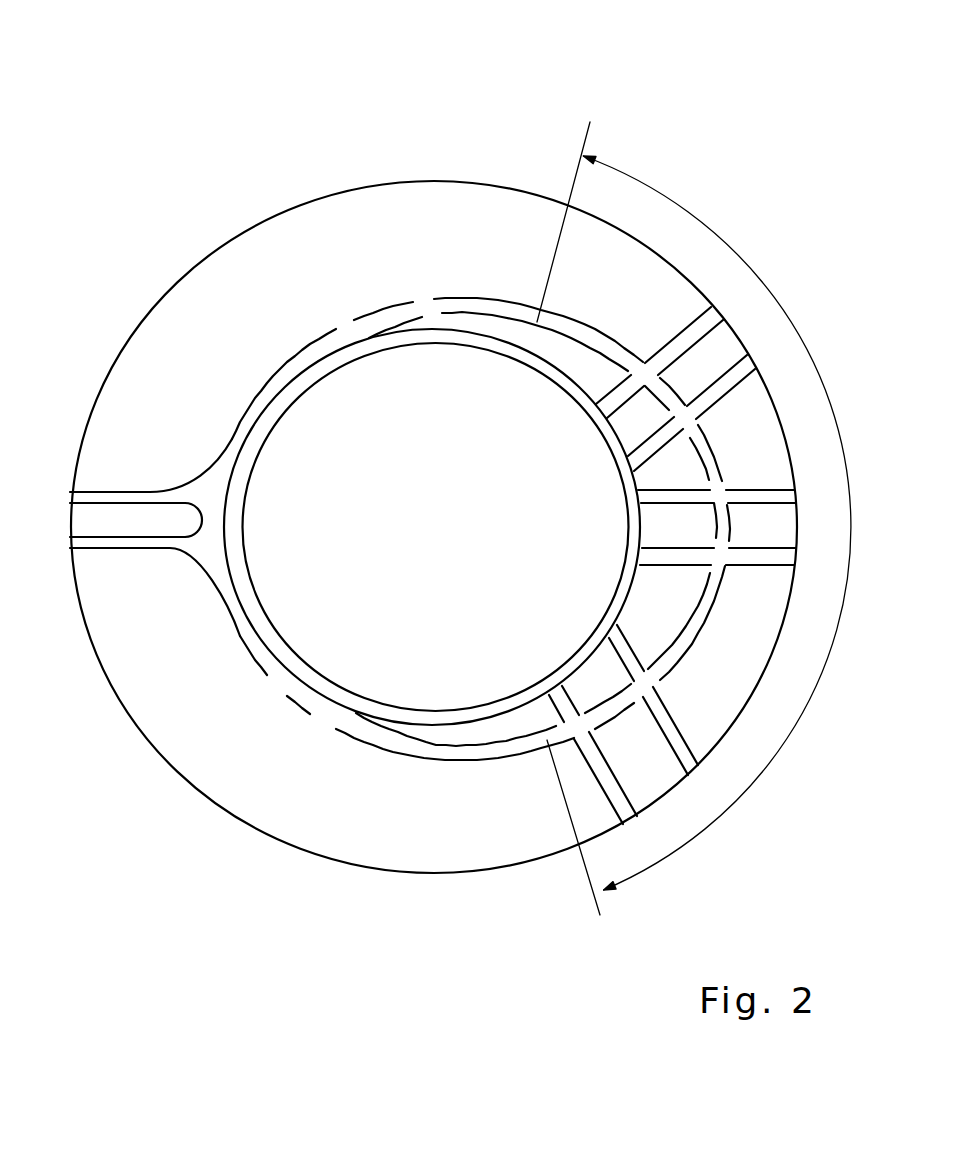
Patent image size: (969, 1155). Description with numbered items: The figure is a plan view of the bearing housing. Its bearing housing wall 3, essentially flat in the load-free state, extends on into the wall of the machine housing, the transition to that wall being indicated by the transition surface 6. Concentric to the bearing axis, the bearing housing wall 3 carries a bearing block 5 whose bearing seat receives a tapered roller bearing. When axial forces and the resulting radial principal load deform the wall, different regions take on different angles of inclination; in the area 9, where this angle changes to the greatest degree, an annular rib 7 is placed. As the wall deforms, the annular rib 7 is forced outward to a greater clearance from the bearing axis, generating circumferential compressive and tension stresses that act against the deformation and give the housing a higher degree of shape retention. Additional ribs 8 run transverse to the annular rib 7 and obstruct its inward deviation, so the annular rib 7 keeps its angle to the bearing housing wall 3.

The bearing housing wall 3 is at (305, 273).
The bearing block 5 is at (410, 337).
The transition surface 6 is at (157, 298).
The annular rib 7 is at (493, 305).
The additional ribs 8 is at (600, 802).
The area of greatest change of inclination angle 9 is at (812, 688).